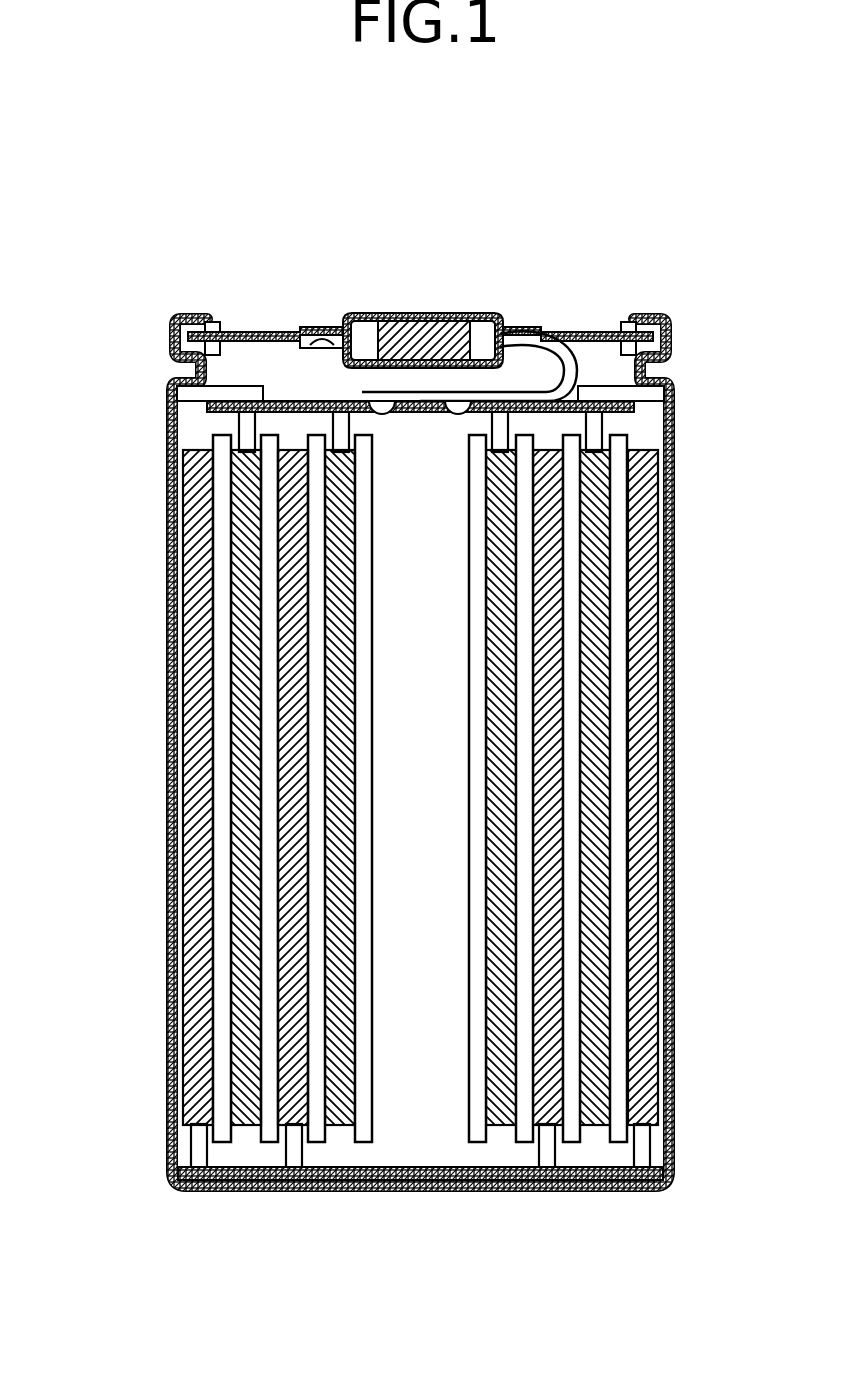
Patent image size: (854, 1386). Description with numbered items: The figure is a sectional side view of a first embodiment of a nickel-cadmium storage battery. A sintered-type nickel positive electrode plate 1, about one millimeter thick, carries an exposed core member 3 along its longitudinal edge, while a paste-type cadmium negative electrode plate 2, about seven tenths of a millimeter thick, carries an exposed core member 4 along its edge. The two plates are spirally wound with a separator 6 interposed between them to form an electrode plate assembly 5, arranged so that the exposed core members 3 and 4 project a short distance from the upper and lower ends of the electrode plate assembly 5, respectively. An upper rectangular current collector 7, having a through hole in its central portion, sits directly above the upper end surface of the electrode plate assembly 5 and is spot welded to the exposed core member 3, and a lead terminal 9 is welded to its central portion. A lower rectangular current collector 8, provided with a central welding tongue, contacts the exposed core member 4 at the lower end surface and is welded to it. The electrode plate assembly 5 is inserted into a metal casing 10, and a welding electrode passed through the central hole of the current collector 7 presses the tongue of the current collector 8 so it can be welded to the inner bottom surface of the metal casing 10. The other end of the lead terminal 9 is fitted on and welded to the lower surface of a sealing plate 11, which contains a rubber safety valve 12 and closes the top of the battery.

The nickel positive electrode plate 1 is at (243, 746).
The cadmium negative electrode plate 2 is at (290, 806).
The exposed core member 3 is at (243, 430).
The exposed core member 4 is at (192, 1152).
The electrode plate assembly 5 is at (652, 443).
The separator 6 is at (217, 874).
The upper current collector 7 is at (282, 400).
The lower current collector 8 is at (352, 1190).
The lead terminal 9 is at (572, 334).
The metal casing 10 is at (166, 592).
The sealing plate 11 is at (245, 332).
The safety valve 12 is at (423, 322).